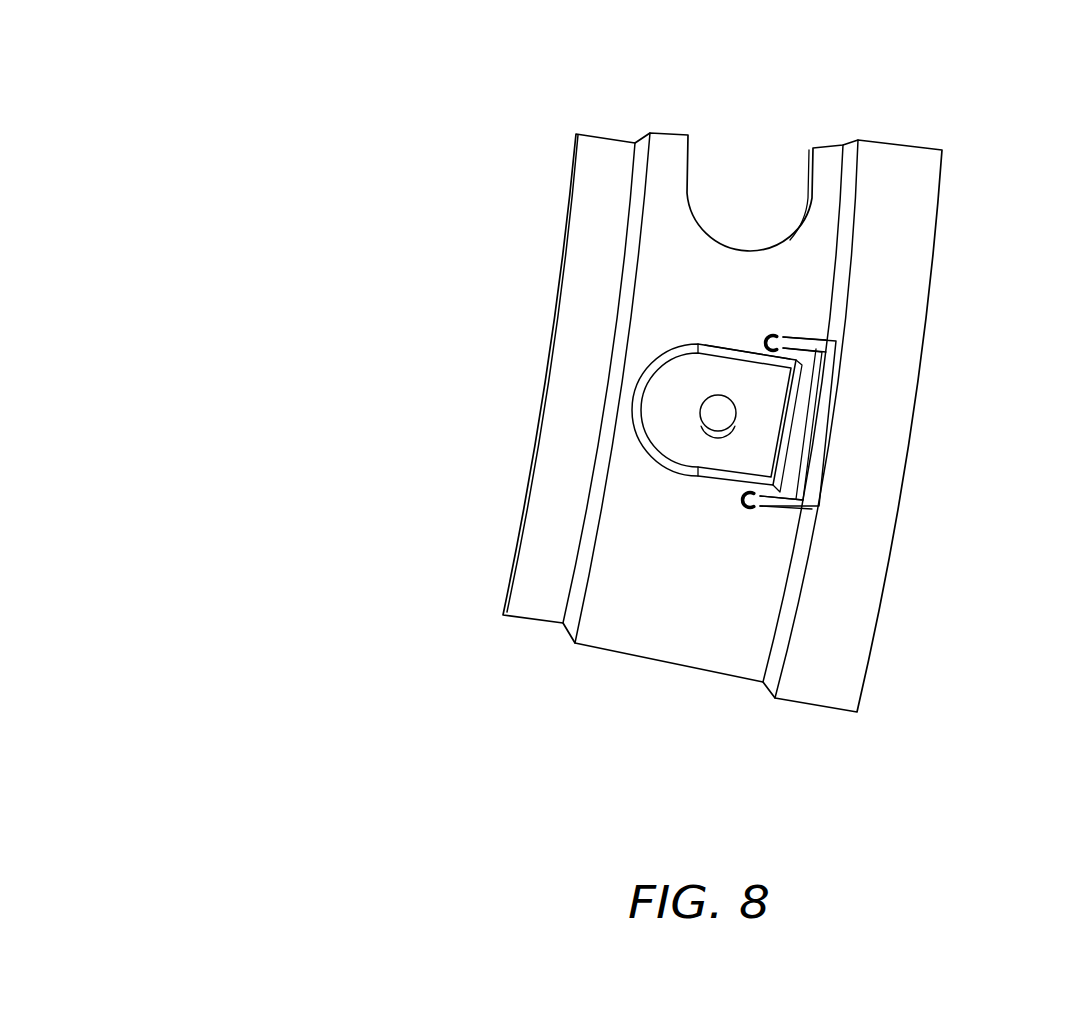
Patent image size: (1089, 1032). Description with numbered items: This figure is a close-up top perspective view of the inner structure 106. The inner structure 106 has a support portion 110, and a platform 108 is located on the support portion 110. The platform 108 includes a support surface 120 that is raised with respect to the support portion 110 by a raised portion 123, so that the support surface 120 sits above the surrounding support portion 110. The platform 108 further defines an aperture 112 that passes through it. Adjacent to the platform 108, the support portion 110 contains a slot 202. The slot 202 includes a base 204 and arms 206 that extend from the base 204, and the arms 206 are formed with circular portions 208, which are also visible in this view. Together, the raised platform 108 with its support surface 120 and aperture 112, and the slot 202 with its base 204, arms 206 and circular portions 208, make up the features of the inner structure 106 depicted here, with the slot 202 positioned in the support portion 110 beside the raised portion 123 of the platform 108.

The inner structure 106 is at (382, 158).
The support portion 110 is at (642, 603).
The platform 108 is at (667, 361).
The support surface 120 is at (667, 425).
The raised portion 123 is at (742, 373).
The aperture 112 is at (728, 412).
The slot 202 is at (822, 370).
The base 204 is at (800, 432).
The arms 206 is at (810, 342).
The circular portions 208 is at (773, 338).